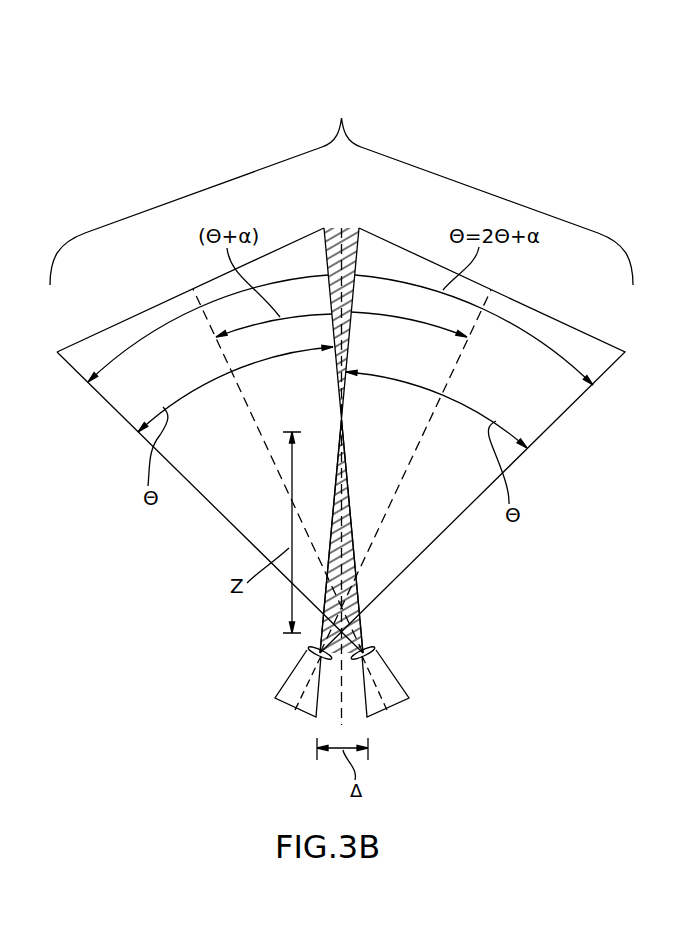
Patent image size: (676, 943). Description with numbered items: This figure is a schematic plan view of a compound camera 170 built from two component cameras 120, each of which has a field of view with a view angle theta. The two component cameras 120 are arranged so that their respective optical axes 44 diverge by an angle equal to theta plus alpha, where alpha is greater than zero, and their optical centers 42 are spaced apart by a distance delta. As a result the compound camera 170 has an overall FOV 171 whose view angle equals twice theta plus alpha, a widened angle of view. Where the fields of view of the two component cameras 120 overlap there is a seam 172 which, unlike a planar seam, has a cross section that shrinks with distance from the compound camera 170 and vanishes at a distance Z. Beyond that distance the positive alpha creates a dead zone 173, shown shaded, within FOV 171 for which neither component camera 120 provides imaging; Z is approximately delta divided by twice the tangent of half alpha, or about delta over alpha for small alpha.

The compound camera 170 is at (181, 141).
The FOV 171 is at (343, 102).
The dead zone 173 is at (347, 245).
The seam 172 is at (358, 592).
The optical axis 44 is at (257, 434).
The optical center 42 is at (318, 648).
The component camera 120 is at (268, 666).